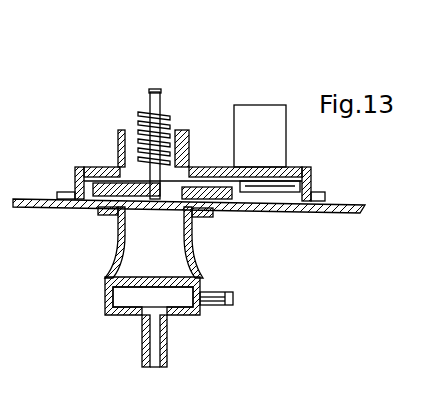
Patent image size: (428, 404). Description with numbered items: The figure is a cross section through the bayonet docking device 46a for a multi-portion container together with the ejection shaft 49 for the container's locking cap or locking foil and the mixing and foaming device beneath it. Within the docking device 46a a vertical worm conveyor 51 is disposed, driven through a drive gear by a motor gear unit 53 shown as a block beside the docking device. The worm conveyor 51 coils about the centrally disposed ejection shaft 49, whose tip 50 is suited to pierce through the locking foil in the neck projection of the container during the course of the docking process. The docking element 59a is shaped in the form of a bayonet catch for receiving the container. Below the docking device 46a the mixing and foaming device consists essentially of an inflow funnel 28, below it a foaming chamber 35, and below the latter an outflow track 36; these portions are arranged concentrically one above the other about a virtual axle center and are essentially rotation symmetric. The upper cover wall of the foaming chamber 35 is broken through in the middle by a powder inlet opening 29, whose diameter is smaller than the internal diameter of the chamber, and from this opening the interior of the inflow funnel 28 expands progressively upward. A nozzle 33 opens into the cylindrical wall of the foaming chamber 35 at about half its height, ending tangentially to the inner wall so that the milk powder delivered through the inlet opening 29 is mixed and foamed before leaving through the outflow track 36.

The tip 50 is at (152, 90).
The ejection shaft 49 is at (153, 110).
The vertical worm conveyor 51 is at (140, 128).
The docking device 46a is at (82, 167).
The docking element 59a is at (183, 133).
The motor gear unit 53 is at (262, 123).
The inflow funnel 28 is at (145, 233).
The powder inlet opening 29 is at (167, 287).
The foaming chamber 35 is at (165, 298).
The nozzle 33 is at (205, 307).
The outflow track 36 is at (155, 355).